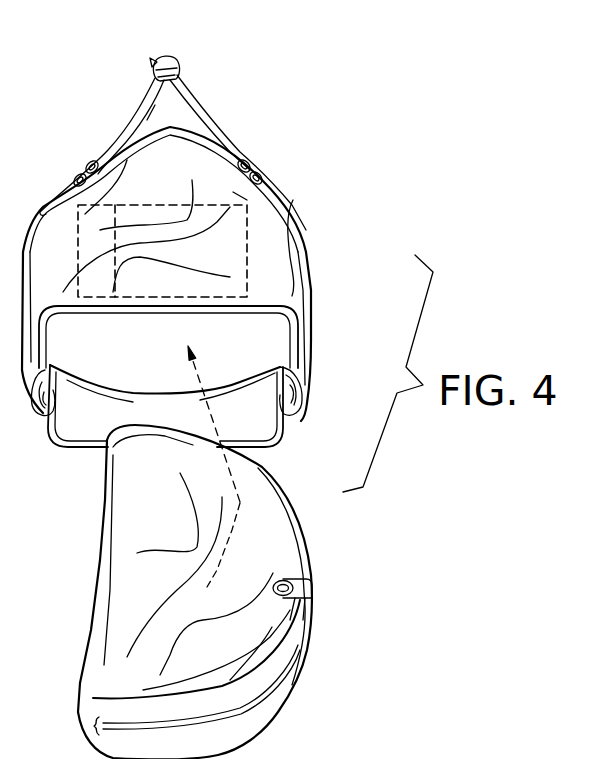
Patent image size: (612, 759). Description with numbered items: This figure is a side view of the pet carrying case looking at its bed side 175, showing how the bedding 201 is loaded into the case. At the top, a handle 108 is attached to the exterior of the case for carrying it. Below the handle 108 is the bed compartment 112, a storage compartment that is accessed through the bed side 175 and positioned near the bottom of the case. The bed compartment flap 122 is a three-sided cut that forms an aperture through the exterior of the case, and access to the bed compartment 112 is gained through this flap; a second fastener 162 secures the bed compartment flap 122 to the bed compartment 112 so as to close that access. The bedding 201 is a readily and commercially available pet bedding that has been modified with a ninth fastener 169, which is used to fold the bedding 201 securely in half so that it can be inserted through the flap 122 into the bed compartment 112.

The handle 108 is at (203, 123).
The bed side 175 is at (275, 233).
The bed compartment 112 is at (245, 343).
The bed compartment flap 122 is at (87, 430).
The second fastener 162 is at (297, 430).
The ninth fastener 169 is at (312, 595).
The bedding 201 is at (300, 657).